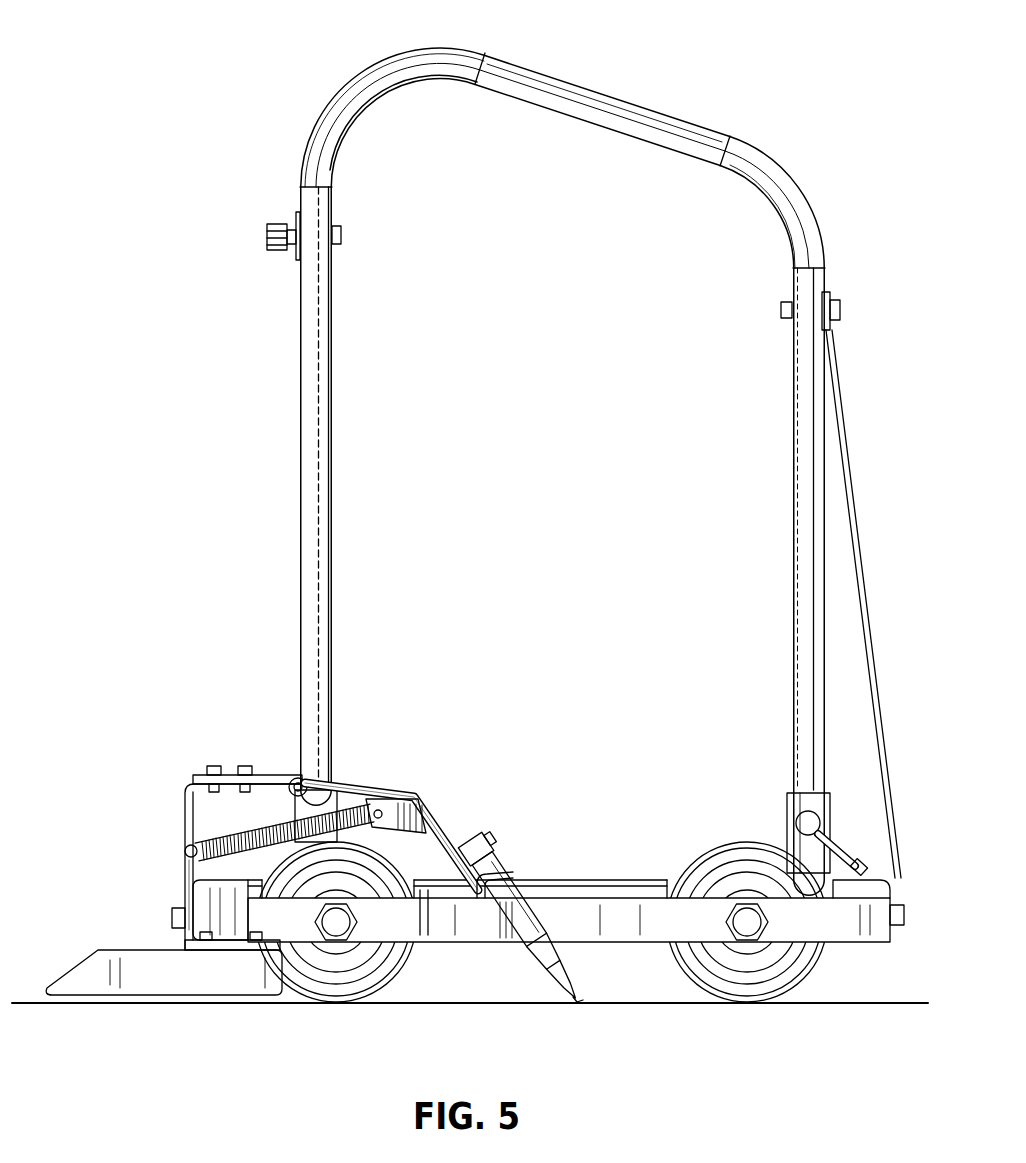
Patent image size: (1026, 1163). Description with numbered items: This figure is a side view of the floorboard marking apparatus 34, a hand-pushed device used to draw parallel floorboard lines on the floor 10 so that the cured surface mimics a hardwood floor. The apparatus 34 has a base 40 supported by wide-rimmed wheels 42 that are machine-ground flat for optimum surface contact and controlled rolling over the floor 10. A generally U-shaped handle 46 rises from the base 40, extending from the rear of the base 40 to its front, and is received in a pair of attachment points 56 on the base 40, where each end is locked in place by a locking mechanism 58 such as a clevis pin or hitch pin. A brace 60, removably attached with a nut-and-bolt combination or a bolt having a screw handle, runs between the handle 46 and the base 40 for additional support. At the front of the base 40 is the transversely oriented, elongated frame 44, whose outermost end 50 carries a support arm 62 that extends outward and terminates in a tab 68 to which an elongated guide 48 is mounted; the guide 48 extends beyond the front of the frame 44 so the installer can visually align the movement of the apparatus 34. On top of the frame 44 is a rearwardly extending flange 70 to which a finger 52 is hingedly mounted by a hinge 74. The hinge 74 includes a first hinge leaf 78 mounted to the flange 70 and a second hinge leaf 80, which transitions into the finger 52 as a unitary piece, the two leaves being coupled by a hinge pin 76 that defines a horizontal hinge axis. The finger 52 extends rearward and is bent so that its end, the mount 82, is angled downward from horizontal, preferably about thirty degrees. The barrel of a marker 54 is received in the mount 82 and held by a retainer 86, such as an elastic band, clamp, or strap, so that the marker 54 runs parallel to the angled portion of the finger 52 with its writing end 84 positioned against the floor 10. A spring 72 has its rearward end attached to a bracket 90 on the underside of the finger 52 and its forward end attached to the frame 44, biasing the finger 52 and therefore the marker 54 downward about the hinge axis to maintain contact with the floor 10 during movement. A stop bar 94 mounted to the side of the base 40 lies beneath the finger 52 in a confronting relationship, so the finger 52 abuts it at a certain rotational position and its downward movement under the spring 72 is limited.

The floor 10 is at (858, 1000).
The floorboard marking apparatus 34 is at (190, 66).
The base 40 is at (600, 878).
The wheels 42 is at (333, 986).
The frame 44 is at (184, 803).
The handle 46 is at (757, 148).
The guide 48 is at (66, 986).
The outermost end 50 is at (184, 878).
The finger 52 is at (418, 790).
The marker 54 is at (572, 966).
The attachment point 56 is at (290, 810).
The locking mechanism 58 is at (822, 822).
The brace 60 is at (297, 222).
The support arm 62 is at (180, 935).
The tab 68 is at (224, 950).
The flange 70 is at (210, 780).
The spring 72 is at (212, 838).
The hinge 74 is at (293, 768).
The hinge pin 76 is at (306, 782).
The first hinge leaf 78 is at (229, 770).
The second hinge leaf 80 is at (385, 785).
The mount 82 is at (510, 872).
The writing end 84 is at (580, 1002).
The retainer 86 is at (480, 842).
The bracket 90 is at (412, 812).
The stop bar 94 is at (436, 930).